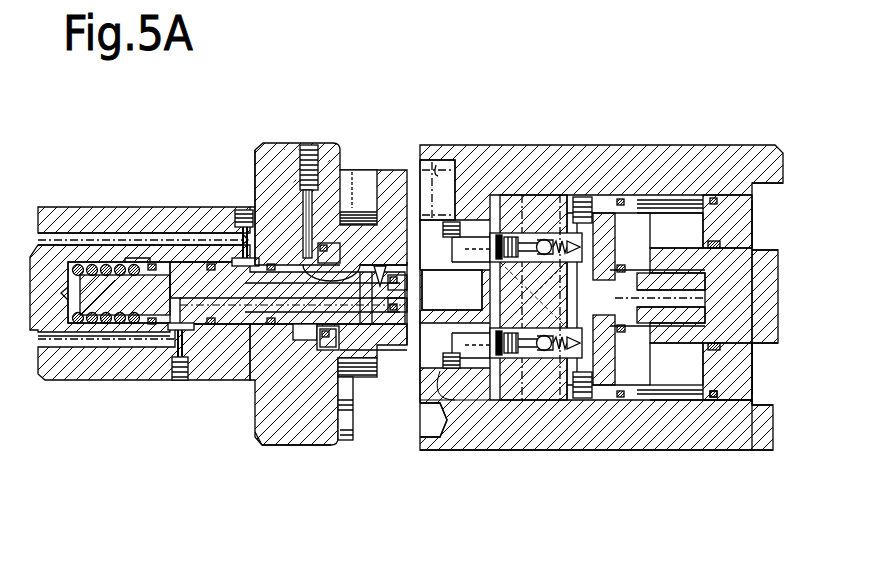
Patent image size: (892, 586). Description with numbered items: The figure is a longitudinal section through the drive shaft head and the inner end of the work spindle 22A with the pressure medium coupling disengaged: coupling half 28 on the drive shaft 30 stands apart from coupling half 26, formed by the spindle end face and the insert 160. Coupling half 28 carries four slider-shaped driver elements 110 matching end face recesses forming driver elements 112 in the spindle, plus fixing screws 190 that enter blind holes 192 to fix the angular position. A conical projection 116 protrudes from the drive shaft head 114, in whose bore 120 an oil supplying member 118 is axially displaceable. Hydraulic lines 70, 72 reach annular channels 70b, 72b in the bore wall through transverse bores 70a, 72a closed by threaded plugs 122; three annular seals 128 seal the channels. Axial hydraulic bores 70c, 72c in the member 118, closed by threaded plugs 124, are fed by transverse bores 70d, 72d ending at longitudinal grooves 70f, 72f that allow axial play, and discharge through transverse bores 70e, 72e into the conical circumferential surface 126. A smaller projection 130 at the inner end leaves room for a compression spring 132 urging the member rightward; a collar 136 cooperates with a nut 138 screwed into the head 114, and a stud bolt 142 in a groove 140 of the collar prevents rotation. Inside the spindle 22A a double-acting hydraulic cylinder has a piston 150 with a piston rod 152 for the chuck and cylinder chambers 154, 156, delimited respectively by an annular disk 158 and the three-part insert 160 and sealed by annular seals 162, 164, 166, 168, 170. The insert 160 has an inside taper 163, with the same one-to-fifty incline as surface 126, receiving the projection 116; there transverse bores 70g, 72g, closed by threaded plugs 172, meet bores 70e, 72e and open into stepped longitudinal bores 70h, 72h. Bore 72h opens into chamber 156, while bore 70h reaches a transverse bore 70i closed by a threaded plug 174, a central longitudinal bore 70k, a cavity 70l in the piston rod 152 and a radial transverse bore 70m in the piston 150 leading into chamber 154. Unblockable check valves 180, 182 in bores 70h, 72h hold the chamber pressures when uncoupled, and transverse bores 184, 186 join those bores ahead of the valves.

The work spindle 22A is at (680, 170).
The pressure medium coupling half 26 is at (512, 452).
The pressure medium coupling half 28 is at (300, 446).
The drive shaft 30 is at (60, 207).
The hydraulic line 70 is at (96, 231).
The transverse bore 70a is at (290, 148).
The annular channel 70b is at (262, 446).
The hydraulic bore 70c is at (393, 268).
The transverse bore 70d is at (258, 200).
The transverse bore 70e is at (416, 262).
The longitudinal groove 70f is at (303, 143).
The transverse bore 70g is at (466, 236).
The longitudinal bore 70h is at (500, 232).
The transverse bore 70i is at (558, 238).
The central longitudinal bore 70k is at (678, 395).
The cavity 70l is at (735, 405).
The radial transverse bore 70m is at (690, 452).
The hydraulic line 72 is at (97, 328).
The transverse bore 72a is at (200, 330).
The annular channel 72b is at (210, 262).
The hydraulic bore 72c is at (268, 432).
The transverse bore 72d is at (240, 270).
The transverse bore 72e is at (392, 330).
The longitudinal groove 72f is at (235, 380).
The transverse bore 72g is at (445, 402).
The longitudinal bore 72h is at (458, 368).
The driver elements 110 is at (370, 345).
The driver elements 112 is at (440, 250).
The drive shaft head 114 is at (200, 258).
The conical projection 116 is at (348, 352).
The oil supplying member 118 is at (182, 197).
The bore 120 is at (119, 237).
The threaded plugs 122 is at (248, 212).
The threaded plugs 124 is at (426, 220).
The conical circumferential surface 126 is at (410, 340).
The annular seals 128 is at (132, 330).
The circular-cylindrical projection 130 is at (66, 336).
The compression spring 132 is at (112, 334).
The collar 136 is at (334, 428).
The nut 138 is at (352, 178).
The groove 140 is at (378, 264).
The stud bolt 142 is at (310, 165).
The piston 150 is at (646, 236).
The piston rod 152 is at (752, 333).
The cylinder chamber 154 is at (700, 145).
The cylinder chamber 156 is at (582, 195).
The annular disk 158 is at (758, 188).
The insert 160 is at (470, 358).
The annular seal 162 is at (618, 345).
The inside taper 163 is at (432, 307).
The annular seal 164 is at (630, 345).
The annular seal 166 is at (640, 190).
The annular seal 168 is at (720, 200).
The annular seal 170 is at (725, 243).
The threaded plugs 172 is at (494, 236).
The threaded plug 174 is at (540, 195).
The check valve 180 is at (549, 240).
The check valve 182 is at (515, 365).
The transverse bore 184 is at (598, 380).
The transverse bore 186 is at (556, 358).
The fixing screws 190 is at (355, 440).
The blind holes 192 is at (418, 435).